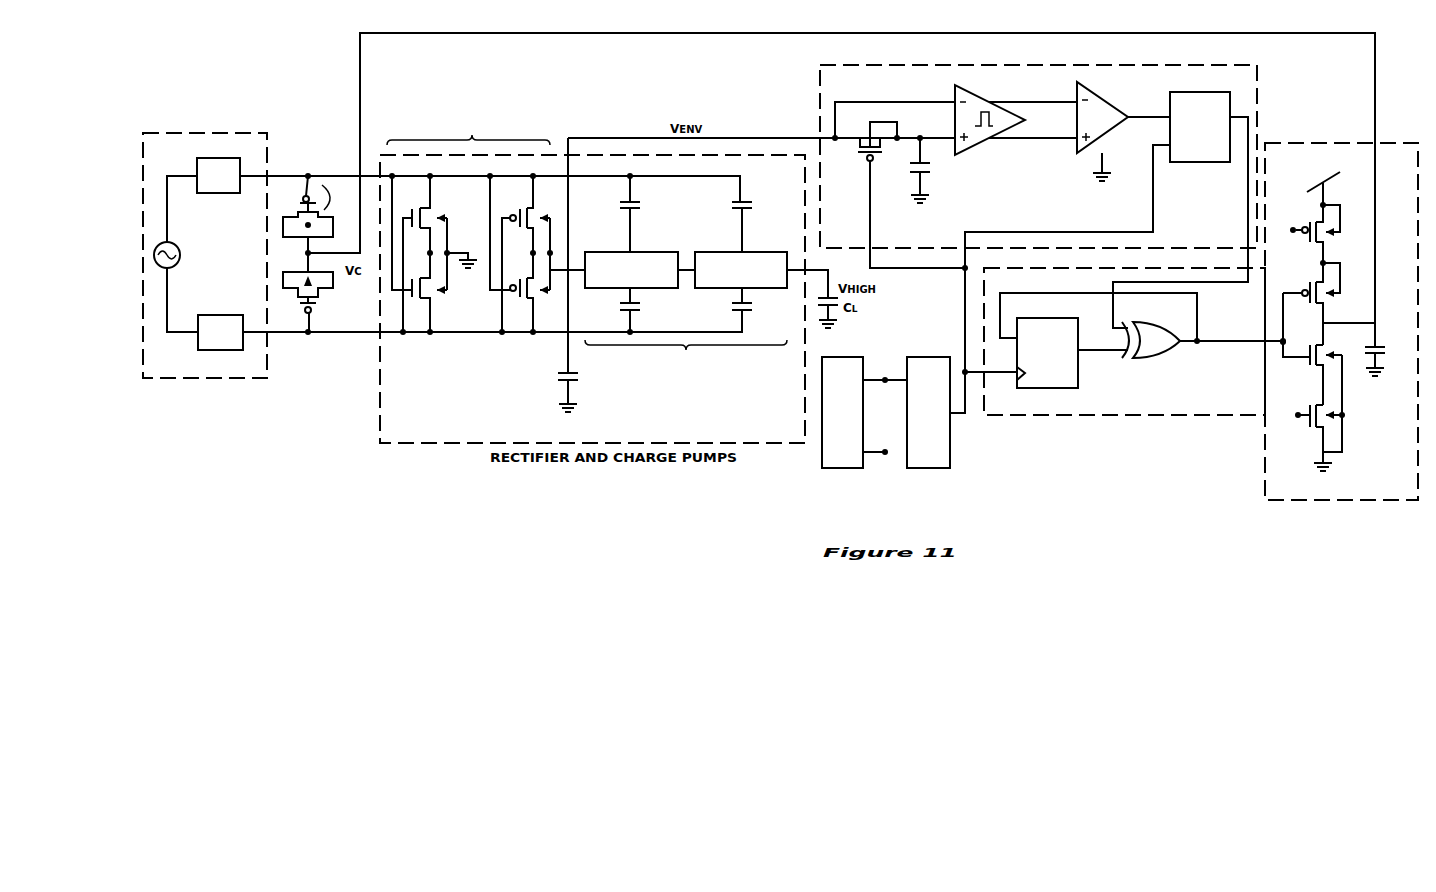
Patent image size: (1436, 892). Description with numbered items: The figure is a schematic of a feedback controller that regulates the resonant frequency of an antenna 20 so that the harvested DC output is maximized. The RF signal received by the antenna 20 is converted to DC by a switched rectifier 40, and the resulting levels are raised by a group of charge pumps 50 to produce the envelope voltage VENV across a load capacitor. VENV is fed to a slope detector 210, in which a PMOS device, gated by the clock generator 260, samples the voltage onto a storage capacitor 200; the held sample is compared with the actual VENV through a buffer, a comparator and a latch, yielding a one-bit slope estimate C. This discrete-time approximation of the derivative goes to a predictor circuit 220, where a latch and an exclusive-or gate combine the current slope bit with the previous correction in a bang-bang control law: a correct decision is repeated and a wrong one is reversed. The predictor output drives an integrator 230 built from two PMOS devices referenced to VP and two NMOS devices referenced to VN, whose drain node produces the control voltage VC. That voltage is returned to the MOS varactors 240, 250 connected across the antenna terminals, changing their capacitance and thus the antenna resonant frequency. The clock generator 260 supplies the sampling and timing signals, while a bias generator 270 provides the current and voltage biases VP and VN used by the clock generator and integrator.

The antenna 20 is at (270, 367).
The switched rectifier 40 is at (470, 224).
The charge pumps 50 is at (686, 273).
The storage capacitor 200 is at (990, 129).
The slope detector 210 is at (1038, 145).
The predictor circuit 220 is at (1208, 416).
The integrator 230 is at (1265, 462).
The MOS varactor 240 is at (317, 307).
The MOS varactor 250 is at (315, 198).
The clock generator 260 is at (925, 470).
The bias generator 270 is at (842, 470).